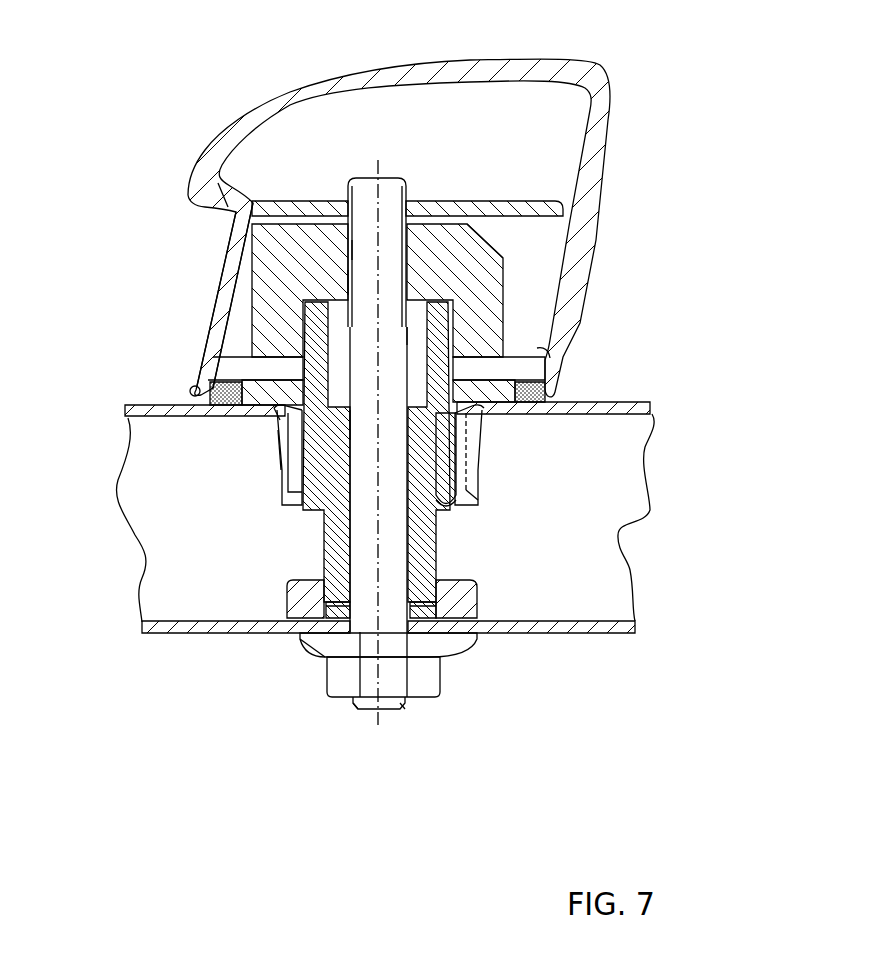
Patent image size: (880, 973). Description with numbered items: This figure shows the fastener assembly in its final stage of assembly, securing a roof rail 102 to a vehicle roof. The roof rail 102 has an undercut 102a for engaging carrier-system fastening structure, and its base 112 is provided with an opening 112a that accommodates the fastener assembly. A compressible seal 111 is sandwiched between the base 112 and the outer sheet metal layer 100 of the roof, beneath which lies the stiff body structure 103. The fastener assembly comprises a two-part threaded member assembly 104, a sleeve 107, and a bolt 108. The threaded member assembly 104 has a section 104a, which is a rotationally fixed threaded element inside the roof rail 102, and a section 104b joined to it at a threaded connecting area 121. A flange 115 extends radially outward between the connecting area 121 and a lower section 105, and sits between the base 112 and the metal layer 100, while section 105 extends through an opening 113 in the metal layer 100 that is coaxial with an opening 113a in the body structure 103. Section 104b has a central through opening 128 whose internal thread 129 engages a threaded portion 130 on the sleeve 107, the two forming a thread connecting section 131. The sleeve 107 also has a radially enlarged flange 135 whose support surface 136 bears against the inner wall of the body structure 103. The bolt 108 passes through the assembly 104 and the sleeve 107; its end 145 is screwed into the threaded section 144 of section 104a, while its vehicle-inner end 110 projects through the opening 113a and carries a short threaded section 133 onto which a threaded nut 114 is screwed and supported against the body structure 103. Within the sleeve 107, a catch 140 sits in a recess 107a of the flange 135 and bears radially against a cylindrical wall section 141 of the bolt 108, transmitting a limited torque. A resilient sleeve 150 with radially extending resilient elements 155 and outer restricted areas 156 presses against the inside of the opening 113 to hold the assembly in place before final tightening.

The outer sheet metal layer 100 is at (656, 407).
The roof rail 102 is at (222, 122).
The undercut 102a is at (228, 208).
The body structure 103 is at (640, 628).
The threaded member assembly 104 is at (466, 447).
The first section of threaded member 104a is at (514, 300).
The second section of threaded member 104b is at (620, 448).
The second section of section 104b 105 is at (450, 470).
The sleeve 107 is at (440, 553).
The recess 107a is at (610, 678).
The bolt 108 is at (377, 176).
The vehicle-inner end of bolt 110 is at (381, 670).
The seal 111 is at (190, 390).
The base of roof rail 112 is at (490, 363).
The opening in base 112a is at (200, 362).
The opening in outer metal layer 113 is at (482, 430).
The opening in body structure 113a is at (440, 644).
The threaded nut 114 is at (343, 708).
The flange 115 is at (535, 393).
The threaded connecting area 121 is at (537, 350).
The through opening 128 is at (418, 333).
The internal thread 129 is at (358, 425).
The threaded portion of sleeve 130 is at (322, 540).
The thread connecting section 131 is at (441, 512).
The threaded section of bolt end 133 is at (423, 670).
The enlarged flange 135 is at (297, 590).
The support surface 136 is at (312, 634).
The catch 140 is at (330, 617).
The cylindrical wall section 141 is at (437, 574).
The threaded section 144 is at (346, 282).
The other end of bolt 145 is at (363, 250).
The sleeve 150 is at (282, 482).
The resilient elements 155 is at (275, 466).
The restricted areas 156 is at (276, 436).